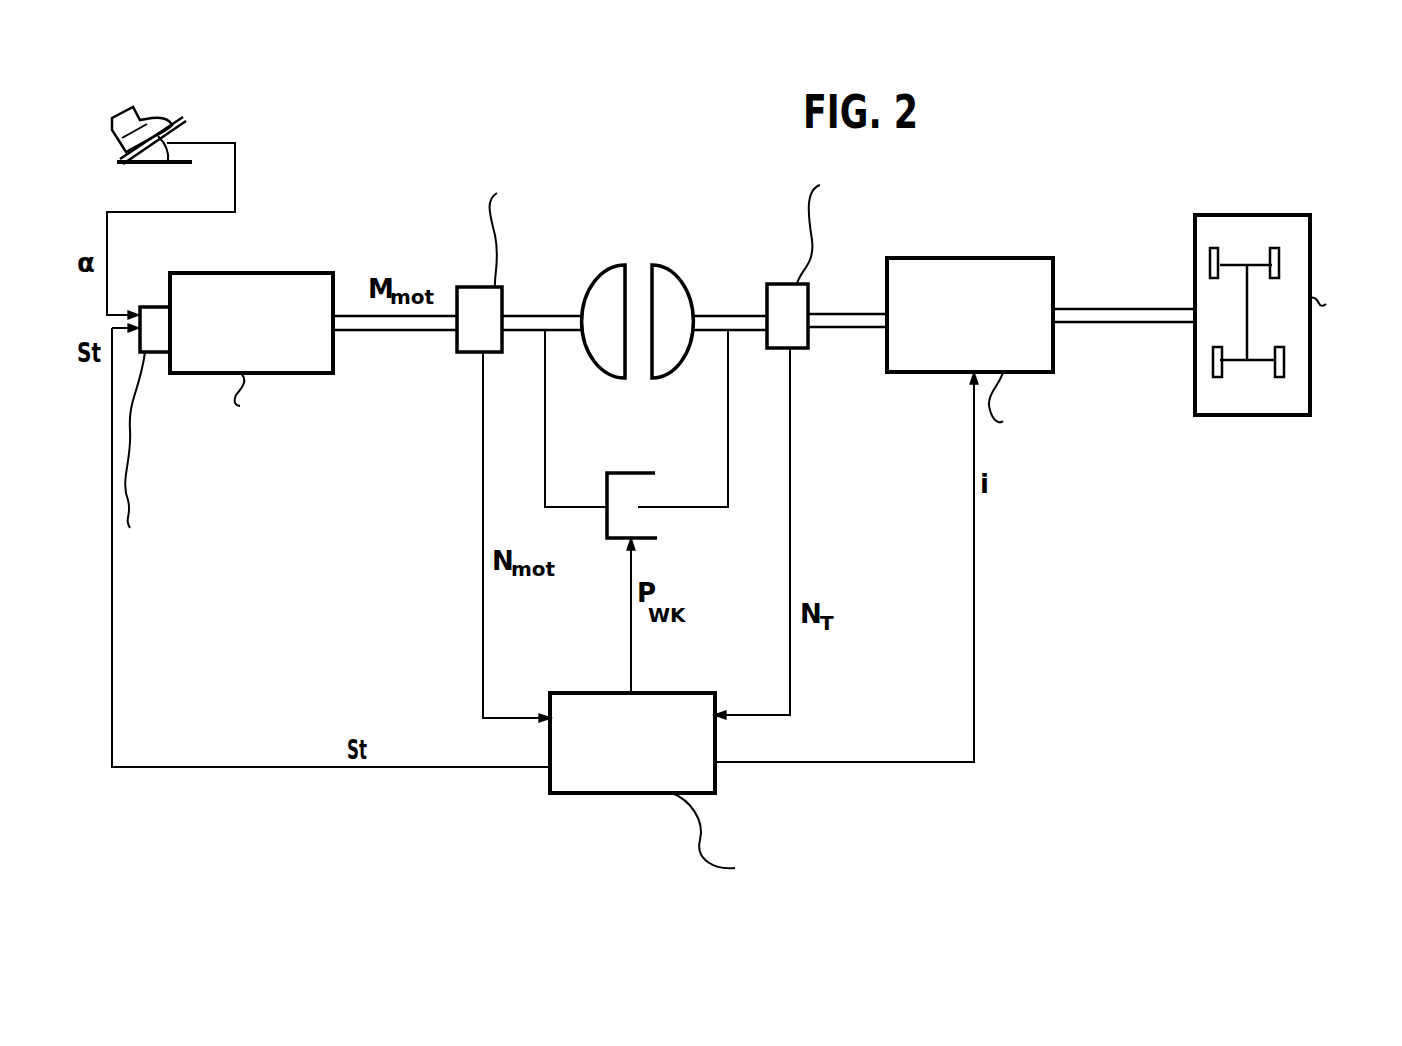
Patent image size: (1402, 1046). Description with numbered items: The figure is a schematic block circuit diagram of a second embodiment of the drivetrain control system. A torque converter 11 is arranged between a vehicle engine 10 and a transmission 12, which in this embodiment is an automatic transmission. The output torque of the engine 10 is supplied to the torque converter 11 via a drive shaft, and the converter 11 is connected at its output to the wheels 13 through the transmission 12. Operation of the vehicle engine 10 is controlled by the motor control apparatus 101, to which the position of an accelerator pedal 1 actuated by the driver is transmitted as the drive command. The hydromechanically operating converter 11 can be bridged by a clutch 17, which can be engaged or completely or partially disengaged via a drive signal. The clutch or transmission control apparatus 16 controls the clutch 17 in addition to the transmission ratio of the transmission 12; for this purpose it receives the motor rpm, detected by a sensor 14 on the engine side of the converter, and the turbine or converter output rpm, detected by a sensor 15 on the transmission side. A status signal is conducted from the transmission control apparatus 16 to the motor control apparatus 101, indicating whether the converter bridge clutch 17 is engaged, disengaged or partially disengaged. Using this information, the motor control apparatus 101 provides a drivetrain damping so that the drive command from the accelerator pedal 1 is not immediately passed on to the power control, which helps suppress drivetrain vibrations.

The accelerator pedal 1 is at (183, 135).
The vehicle engine 10 is at (302, 273).
The motor control apparatus 101 is at (157, 352).
The sensor 14 is at (475, 287).
The torque converter 11 is at (635, 263).
The sensor 15 is at (785, 284).
The transmission 12 is at (960, 258).
The wheels 13 is at (1243, 215).
The clutch 17 is at (625, 473).
The clutch or transmission control apparatus 16 is at (637, 793).